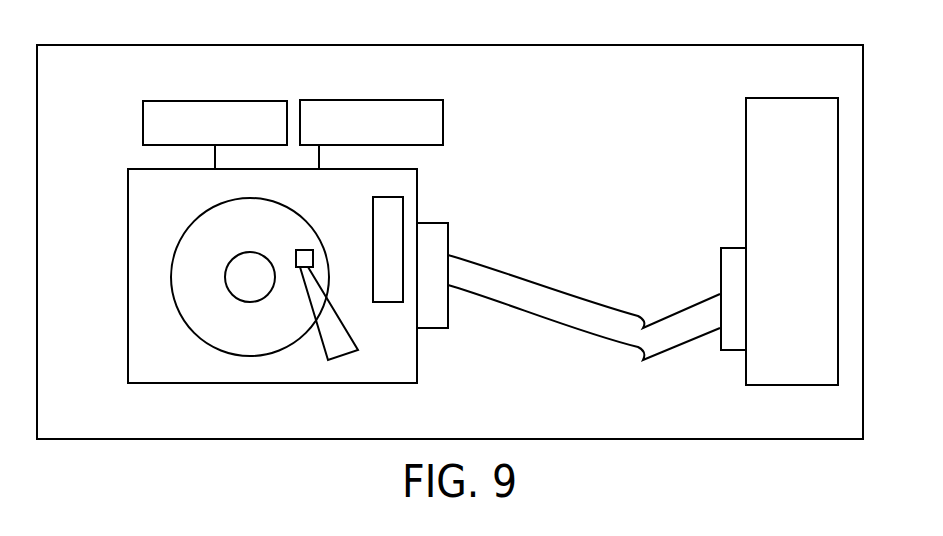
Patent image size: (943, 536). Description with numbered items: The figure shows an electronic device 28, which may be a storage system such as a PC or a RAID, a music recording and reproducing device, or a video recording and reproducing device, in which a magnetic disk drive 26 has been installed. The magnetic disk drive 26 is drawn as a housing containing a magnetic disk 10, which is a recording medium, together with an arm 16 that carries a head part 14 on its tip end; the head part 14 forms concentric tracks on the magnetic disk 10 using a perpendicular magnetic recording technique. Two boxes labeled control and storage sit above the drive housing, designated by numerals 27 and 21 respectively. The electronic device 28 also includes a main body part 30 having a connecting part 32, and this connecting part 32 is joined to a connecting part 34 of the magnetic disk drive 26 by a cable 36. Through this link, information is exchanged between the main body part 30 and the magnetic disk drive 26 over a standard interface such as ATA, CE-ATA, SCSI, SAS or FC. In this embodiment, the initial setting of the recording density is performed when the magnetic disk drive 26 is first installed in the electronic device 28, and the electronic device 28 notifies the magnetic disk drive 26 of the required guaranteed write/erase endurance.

The magnetic disk 10 is at (247, 357).
The head part 14 is at (313, 250).
The arm 16 is at (338, 358).
The storage unit 21 is at (371, 100).
The magnetic disk drive 26 is at (128, 272).
The control unit 27 is at (215, 101).
The electronic device 28 is at (544, 119).
The main body part 30 is at (838, 243).
The connecting part 32 is at (733, 351).
The connecting part 34 is at (430, 330).
The cable 36 is at (545, 298).